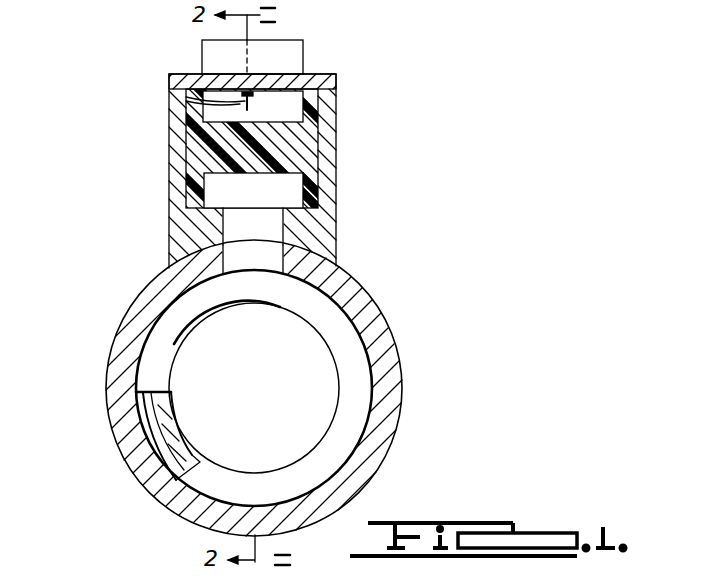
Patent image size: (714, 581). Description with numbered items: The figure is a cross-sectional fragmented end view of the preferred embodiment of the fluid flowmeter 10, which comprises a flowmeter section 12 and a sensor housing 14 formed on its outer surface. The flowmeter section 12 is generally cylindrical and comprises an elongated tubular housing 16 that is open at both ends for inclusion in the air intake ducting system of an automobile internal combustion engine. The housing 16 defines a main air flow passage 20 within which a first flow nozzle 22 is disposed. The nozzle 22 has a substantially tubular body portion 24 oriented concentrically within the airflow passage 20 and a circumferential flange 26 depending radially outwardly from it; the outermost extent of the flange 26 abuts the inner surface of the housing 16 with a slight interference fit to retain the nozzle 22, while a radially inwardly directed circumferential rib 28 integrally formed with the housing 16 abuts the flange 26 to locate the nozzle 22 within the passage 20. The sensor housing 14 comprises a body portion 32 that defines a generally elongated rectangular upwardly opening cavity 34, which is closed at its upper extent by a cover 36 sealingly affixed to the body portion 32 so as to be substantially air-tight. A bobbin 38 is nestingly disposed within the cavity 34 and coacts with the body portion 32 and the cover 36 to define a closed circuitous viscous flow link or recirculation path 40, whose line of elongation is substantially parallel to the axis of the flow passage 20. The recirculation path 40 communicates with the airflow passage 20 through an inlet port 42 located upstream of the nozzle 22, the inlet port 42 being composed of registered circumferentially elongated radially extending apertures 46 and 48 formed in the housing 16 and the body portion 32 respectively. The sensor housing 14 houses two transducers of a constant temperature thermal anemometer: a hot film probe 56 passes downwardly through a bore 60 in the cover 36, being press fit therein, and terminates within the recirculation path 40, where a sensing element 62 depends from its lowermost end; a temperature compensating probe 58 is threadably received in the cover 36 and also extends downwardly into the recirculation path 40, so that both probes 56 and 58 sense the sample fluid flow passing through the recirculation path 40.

The flowmeter 10 is at (251, 268).
The flowmeter section 12 is at (251, 388).
The sensor housing 14 is at (237, 137).
The tubular housing 16 is at (372, 455).
The main air flow passage 20 is at (238, 387).
The first flow nozzle 22 is at (353, 378).
The tubular body portion 24 is at (190, 443).
The circumferential flange 26 is at (193, 480).
The circumferential rib 28 is at (142, 415).
The body portion 32 is at (178, 147).
The cavity 34 is at (205, 193).
The cover 36 is at (187, 76).
The bobbin 38 is at (253, 180).
The recirculation path 40 is at (297, 66).
The inlet port 42 is at (253, 283).
The aperture 46 is at (249, 247).
The aperture 48 is at (249, 216).
The hot film probe 56 is at (196, 106).
The temperature compensating probe 58 is at (232, 97).
The bore 60 is at (276, 48).
The sensing element 62 is at (253, 106).